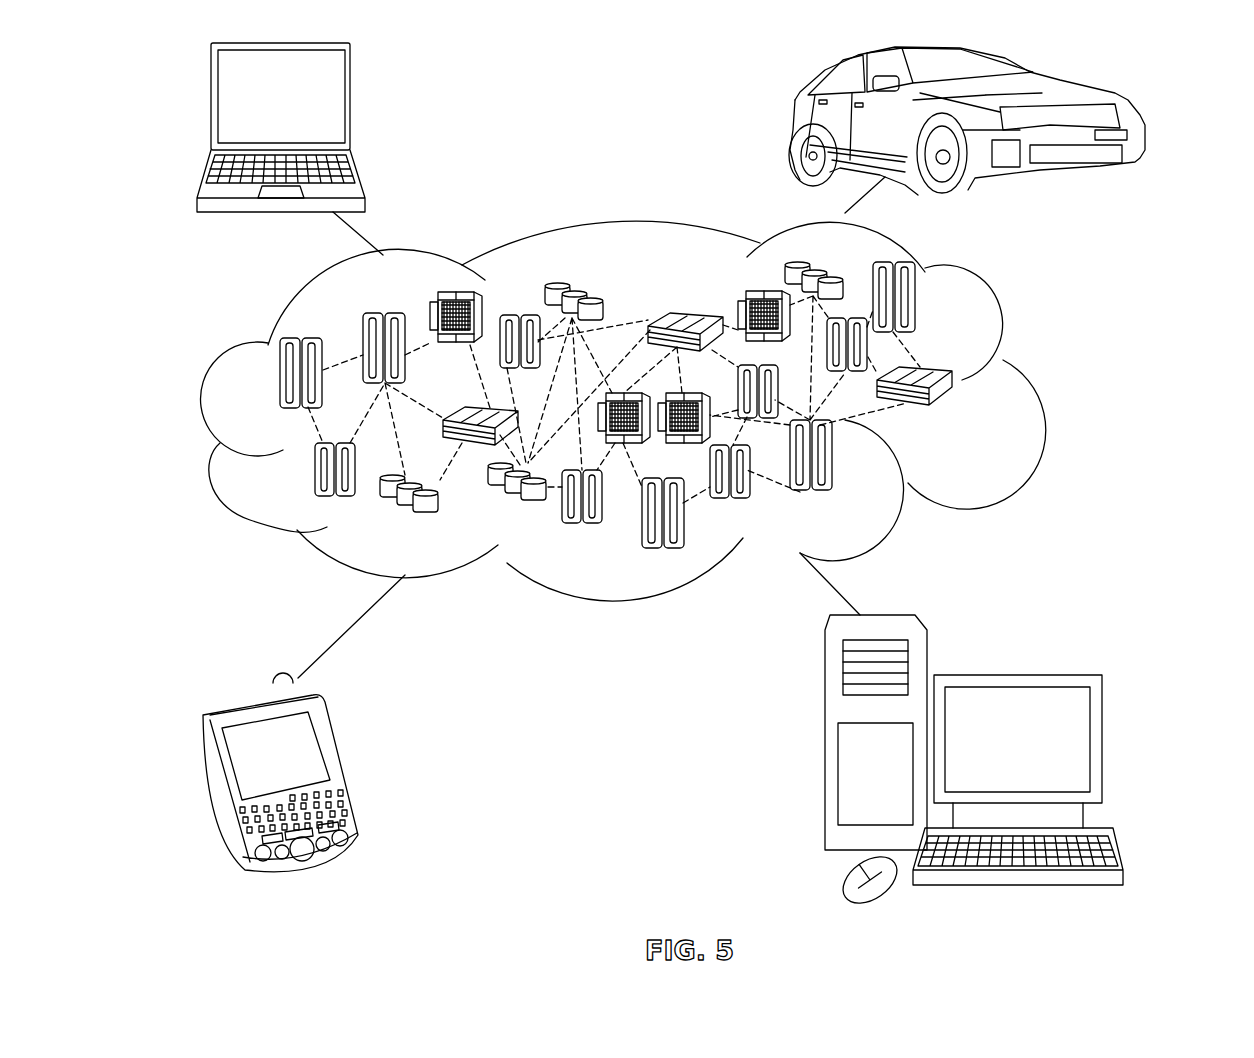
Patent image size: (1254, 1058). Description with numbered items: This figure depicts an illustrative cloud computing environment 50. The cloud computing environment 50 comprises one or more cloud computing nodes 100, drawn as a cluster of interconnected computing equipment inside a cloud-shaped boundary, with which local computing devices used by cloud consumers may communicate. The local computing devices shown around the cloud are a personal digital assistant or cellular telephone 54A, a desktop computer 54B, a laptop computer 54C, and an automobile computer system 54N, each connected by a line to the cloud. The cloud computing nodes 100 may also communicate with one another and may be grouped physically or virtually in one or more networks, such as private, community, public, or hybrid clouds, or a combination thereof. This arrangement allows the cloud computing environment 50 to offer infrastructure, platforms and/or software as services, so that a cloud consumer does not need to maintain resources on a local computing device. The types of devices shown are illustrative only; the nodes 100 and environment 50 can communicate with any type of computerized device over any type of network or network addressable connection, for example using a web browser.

The personal digital assistant (PDA) or cellular telephone 54A is at (338, 770).
The desktop computer 54B is at (1015, 675).
The laptop computer 54C is at (350, 106).
The automobile computer system 54N is at (793, 122).
The cloud computing environment 50 is at (639, 411).
The cloud computing nodes 100 is at (958, 413).